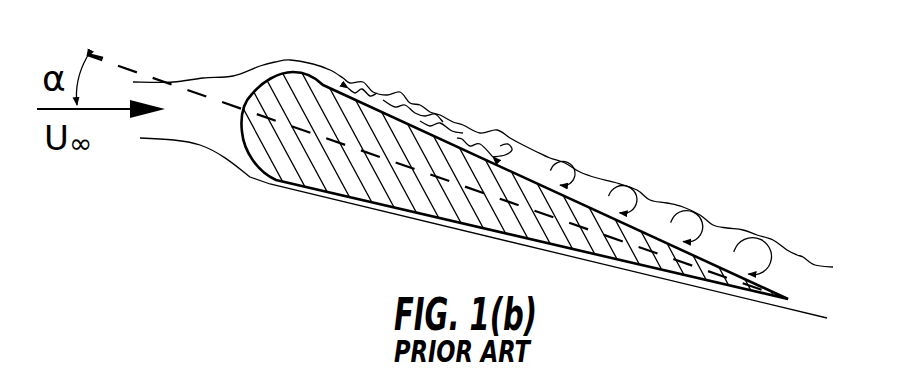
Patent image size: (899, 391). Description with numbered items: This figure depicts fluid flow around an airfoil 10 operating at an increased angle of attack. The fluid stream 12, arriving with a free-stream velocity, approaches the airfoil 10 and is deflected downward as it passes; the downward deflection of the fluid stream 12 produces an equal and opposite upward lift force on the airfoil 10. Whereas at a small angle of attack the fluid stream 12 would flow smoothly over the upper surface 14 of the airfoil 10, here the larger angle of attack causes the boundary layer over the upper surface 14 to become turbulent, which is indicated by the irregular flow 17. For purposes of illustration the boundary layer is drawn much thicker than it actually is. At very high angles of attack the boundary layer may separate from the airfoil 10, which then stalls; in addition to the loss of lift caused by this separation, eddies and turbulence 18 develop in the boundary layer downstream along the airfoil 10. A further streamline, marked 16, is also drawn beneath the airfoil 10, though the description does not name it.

The airfoil 10 is at (452, 147).
The fluid stream 12 is at (193, 79).
The upper surface 14 is at (347, 90).
The lower surface flow streamline 16 is at (243, 109).
The irregular flow 17 is at (413, 112).
The eddies and turbulence 18 is at (788, 247).